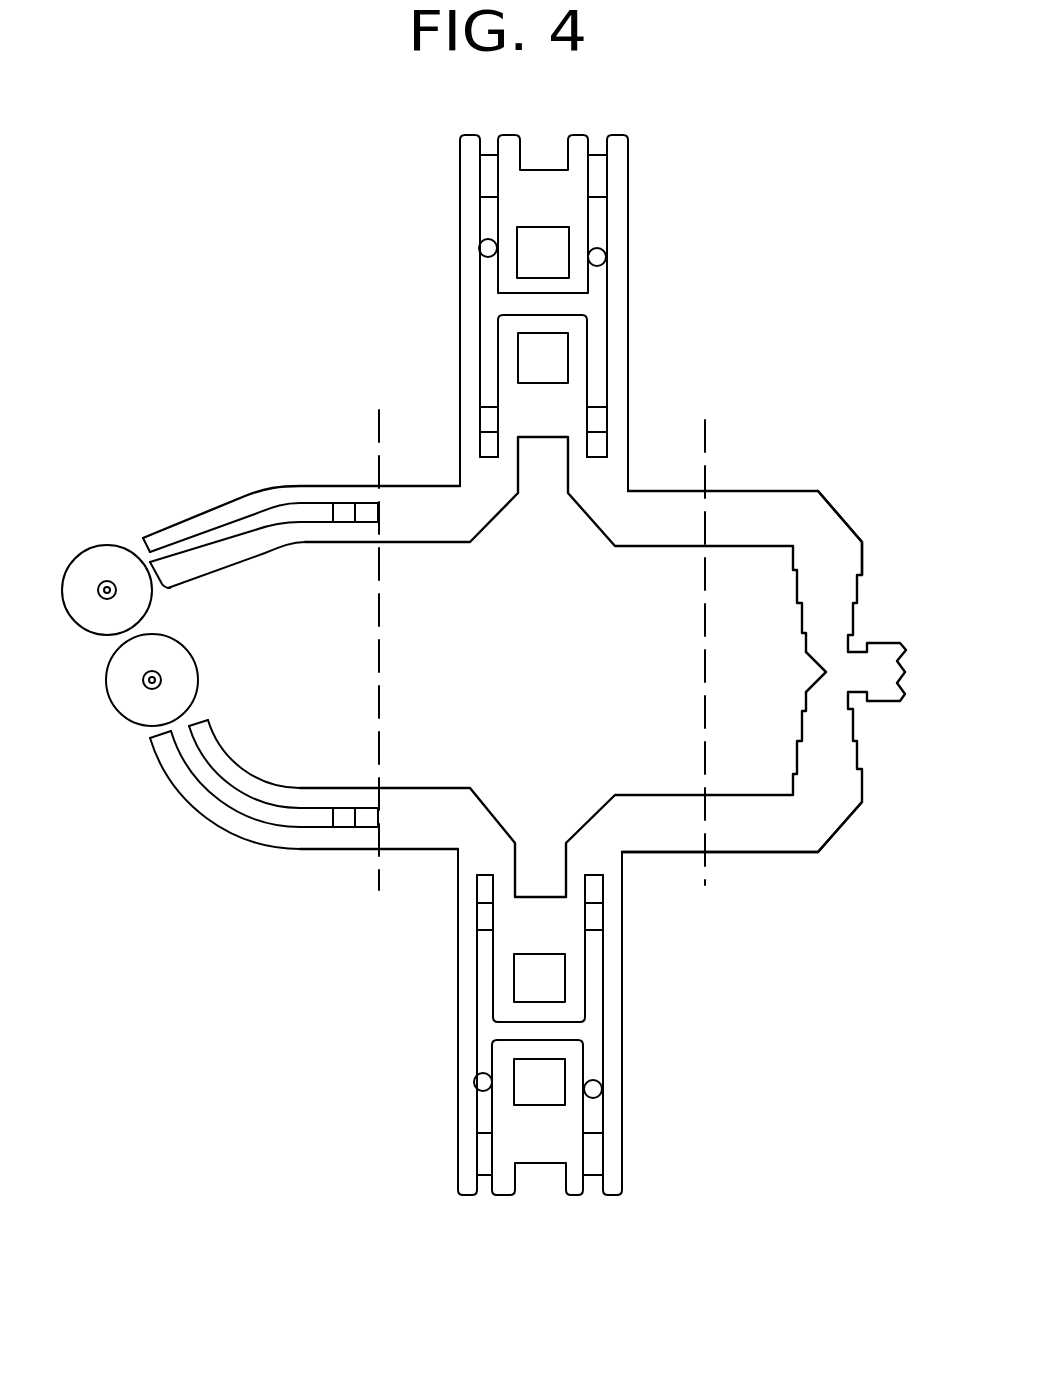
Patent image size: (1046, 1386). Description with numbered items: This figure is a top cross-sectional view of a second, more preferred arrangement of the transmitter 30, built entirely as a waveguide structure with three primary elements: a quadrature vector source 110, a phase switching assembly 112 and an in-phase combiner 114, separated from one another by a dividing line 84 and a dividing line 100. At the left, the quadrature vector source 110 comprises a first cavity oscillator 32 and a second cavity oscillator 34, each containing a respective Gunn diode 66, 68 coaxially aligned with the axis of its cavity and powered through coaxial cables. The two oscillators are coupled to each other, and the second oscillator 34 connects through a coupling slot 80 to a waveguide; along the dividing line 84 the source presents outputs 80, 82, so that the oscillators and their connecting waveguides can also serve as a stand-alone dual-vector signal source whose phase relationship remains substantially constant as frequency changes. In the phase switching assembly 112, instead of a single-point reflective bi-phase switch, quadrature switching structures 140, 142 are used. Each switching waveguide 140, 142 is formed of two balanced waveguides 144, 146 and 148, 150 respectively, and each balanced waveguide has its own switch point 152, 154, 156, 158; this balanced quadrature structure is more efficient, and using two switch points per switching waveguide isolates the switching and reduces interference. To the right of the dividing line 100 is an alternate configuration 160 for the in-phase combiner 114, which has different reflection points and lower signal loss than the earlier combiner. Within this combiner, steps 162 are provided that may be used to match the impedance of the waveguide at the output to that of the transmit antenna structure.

The transmitter 30 is at (695, 209).
The first cavity oscillator 32 is at (86, 570).
The second cavity oscillator 34 is at (127, 694).
The Gunn diode 66 is at (110, 583).
The Gunn diode 68 is at (160, 676).
The coupling slot 80 is at (385, 512).
The output 82 is at (383, 819).
The dividing line 84 is at (356, 456).
The dividing line 100 is at (726, 466).
The quadrature vector source 110 is at (256, 841).
The phase switching assembly 112 is at (673, 858).
The in-phase combiner 114 is at (832, 846).
The quadrature switching structure 140 is at (634, 127).
The quadrature switching structure 142 is at (455, 1016).
The balanced waveguide 144 is at (473, 340).
The balanced waveguide 146 is at (612, 367).
The balanced waveguide 148 is at (465, 953).
The balanced waveguide 150 is at (612, 994).
The switch point 152 is at (479, 248).
The switch point 154 is at (605, 260).
The switch point 156 is at (476, 1085).
The switch point 158 is at (601, 1091).
The alternate configuration for the in-phase combiner 160 is at (823, 487).
The steps 162 is at (798, 603).